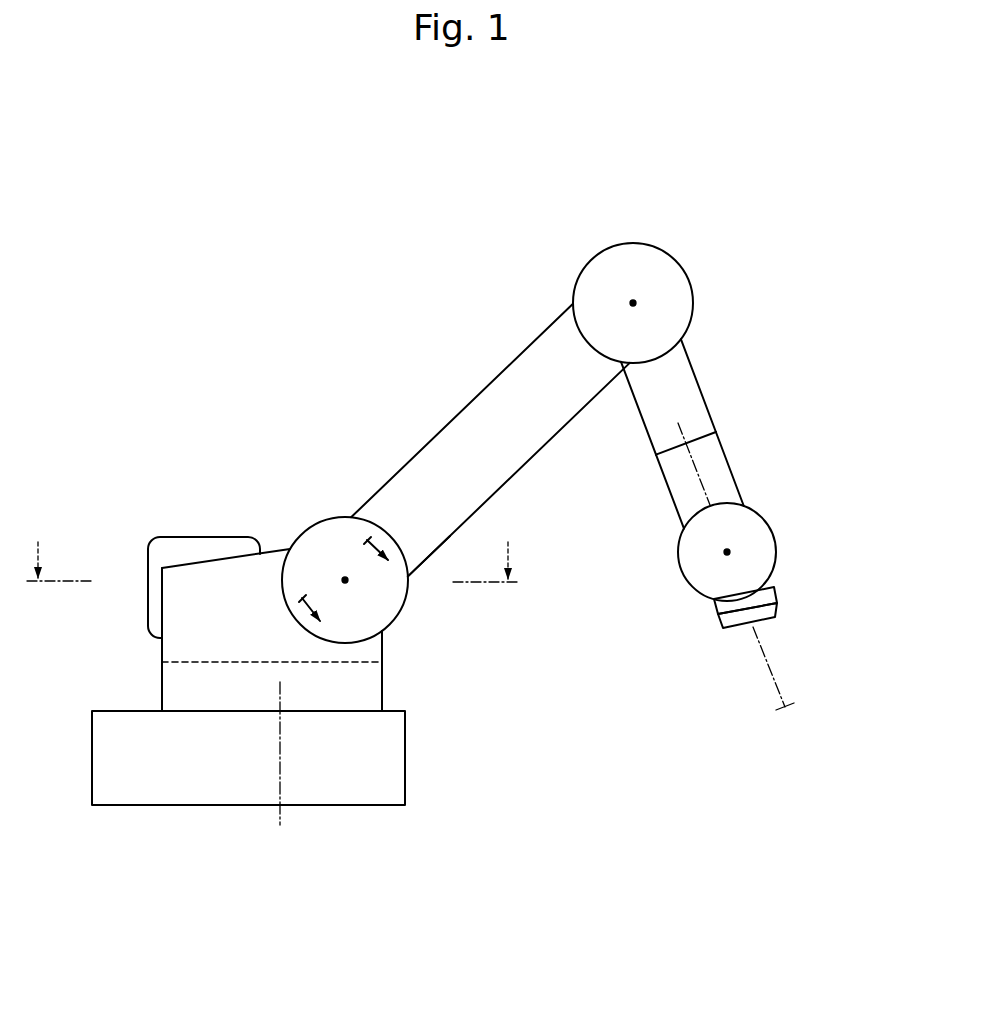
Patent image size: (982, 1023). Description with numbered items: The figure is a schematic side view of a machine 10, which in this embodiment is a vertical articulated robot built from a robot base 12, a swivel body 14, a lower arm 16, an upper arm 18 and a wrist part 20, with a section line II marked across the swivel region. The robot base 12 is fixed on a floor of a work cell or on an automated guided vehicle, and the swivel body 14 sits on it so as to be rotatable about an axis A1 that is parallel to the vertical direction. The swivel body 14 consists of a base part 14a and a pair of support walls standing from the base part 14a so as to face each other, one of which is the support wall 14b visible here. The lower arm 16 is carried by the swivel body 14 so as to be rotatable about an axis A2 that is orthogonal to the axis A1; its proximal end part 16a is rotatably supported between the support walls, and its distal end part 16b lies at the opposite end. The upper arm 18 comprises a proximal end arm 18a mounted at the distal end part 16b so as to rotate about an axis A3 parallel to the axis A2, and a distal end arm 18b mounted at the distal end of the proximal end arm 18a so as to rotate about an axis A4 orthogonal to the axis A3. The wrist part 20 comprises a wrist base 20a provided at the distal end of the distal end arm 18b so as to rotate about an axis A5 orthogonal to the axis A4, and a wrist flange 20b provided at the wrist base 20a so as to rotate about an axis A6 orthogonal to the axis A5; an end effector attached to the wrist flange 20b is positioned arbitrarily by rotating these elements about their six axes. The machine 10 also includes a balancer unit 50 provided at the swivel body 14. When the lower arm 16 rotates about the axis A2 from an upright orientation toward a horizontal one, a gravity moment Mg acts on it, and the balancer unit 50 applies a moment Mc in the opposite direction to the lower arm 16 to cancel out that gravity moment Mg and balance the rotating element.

The machine 10 is at (797, 122).
The robot base 12 is at (237, 778).
The swivel body 14 is at (256, 614).
The base part 14a is at (340, 660).
The support wall 14b is at (247, 613).
The balancer unit 50 is at (168, 522).
The lower arm 16 is at (467, 387).
The proximal end part 16a is at (415, 592).
The distal end part 16b is at (625, 242).
The upper arm 18 is at (738, 470).
The proximal end arm 18a is at (682, 397).
The distal end arm 18b is at (731, 512).
The wrist part 20 is at (805, 599).
The wrist base 20a is at (770, 584).
The wrist flange 20b is at (777, 607).
The axis A1 is at (282, 765).
The axis A2 is at (345, 575).
The axis A3 is at (635, 300).
The axis A4 is at (670, 488).
The axis A5 is at (727, 552).
The axis A6 is at (777, 700).
The moment Mc is at (298, 601).
The gravity moment Mg is at (378, 538).
The section line II is at (272, 546).